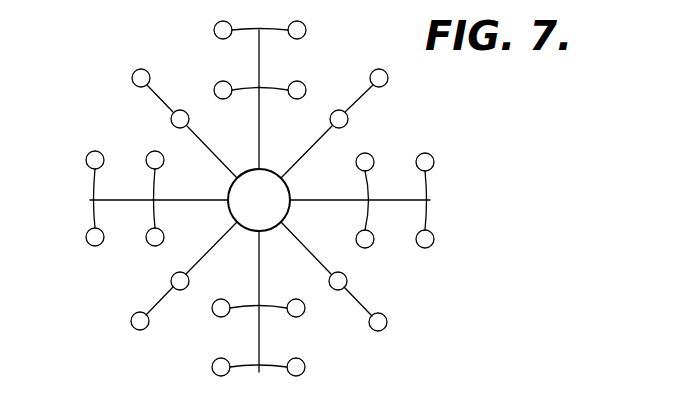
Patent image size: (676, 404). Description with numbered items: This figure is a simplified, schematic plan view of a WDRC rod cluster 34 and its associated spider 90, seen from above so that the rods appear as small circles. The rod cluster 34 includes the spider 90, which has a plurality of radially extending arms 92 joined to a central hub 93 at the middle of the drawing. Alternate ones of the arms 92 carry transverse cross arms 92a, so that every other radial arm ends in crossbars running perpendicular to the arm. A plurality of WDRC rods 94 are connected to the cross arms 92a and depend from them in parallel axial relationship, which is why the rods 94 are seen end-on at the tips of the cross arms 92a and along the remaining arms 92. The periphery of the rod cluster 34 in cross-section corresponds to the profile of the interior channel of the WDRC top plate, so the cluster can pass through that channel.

The WDRC rod cluster 34 is at (132, 342).
The spider 90 is at (344, 67).
The radially extending arms 92 is at (262, 58).
The transverse cross arms 92a is at (428, 188).
The central hub 93 is at (237, 214).
The WDRC rods 94 is at (368, 248).